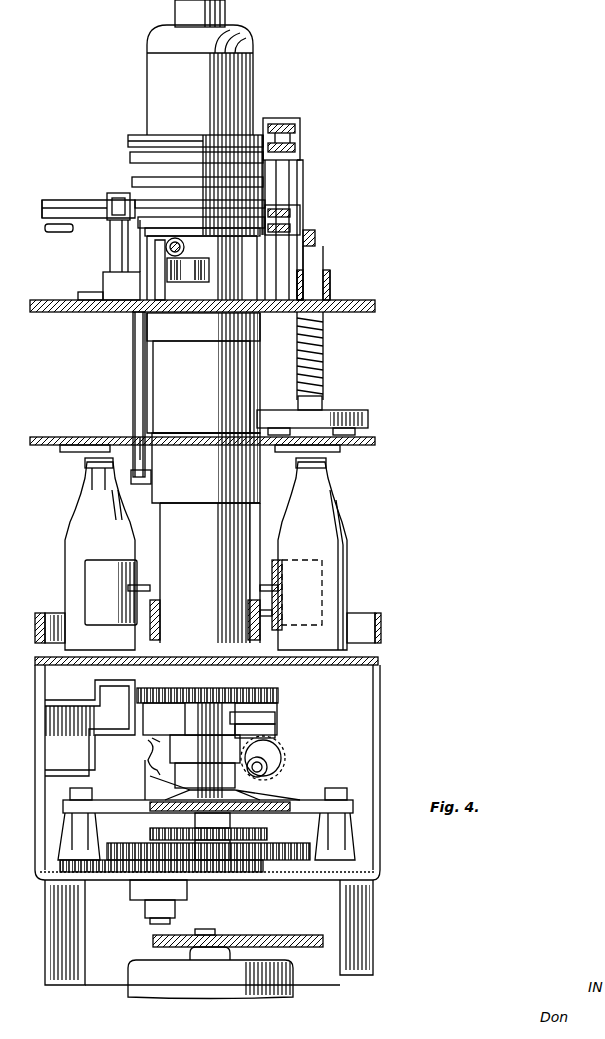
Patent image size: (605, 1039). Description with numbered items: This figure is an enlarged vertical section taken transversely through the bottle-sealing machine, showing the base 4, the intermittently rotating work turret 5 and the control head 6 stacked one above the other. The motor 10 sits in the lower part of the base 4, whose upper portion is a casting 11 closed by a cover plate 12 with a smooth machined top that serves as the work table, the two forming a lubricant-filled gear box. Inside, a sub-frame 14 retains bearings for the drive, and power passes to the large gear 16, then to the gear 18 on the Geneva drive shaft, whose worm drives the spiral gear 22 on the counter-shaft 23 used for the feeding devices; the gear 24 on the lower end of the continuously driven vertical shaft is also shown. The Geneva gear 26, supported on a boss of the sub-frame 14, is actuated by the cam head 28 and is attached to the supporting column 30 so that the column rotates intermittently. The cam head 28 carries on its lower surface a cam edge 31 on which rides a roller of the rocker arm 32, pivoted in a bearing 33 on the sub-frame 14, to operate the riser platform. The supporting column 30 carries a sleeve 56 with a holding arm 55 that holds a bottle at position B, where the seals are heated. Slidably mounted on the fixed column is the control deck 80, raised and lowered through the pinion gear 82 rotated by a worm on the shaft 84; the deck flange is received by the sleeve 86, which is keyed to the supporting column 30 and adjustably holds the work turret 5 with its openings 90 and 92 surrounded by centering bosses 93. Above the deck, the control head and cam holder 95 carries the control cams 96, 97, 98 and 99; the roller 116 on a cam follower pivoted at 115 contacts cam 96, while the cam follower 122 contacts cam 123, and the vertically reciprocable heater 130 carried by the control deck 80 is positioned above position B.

The control head and cam holder 95 is at (252, 48).
The roller 116 is at (285, 126).
The control head 6 is at (305, 139).
The control cam 96 is at (128, 138).
The control cam 97 is at (130, 157).
The control cam 98 is at (133, 181).
The control cam 99 is at (294, 185).
The pivot 115 is at (292, 204).
The cam 123 is at (300, 213).
The cam follower 122 is at (303, 222).
The shaft 84 is at (165, 250).
The pinion gear 82 is at (200, 281).
The control deck 80 is at (350, 302).
The sleeve 86 is at (197, 378).
The heater 130 is at (345, 410).
The centering bosses 93 is at (62, 436).
The opening 90 is at (78, 448).
The work turret 5 is at (380, 441).
The opening 92 is at (330, 452).
The holding arm 55 is at (120, 566).
The supporting column 30 is at (205, 554).
The position B is at (314, 546).
The sleeve 56 is at (165, 623).
The cover plate 12 is at (380, 661).
The casting 11 is at (380, 702).
The base 4 is at (388, 746).
The Geneva gear 26 is at (176, 695).
The cam edge 31 is at (232, 730).
The cam head 28 is at (265, 742).
The spiral gear 22 is at (282, 758).
The counter-shaft 23 is at (270, 768).
The rocker arm 32 is at (150, 761).
The bearing 33 is at (155, 779).
The sub-frame 14 is at (300, 804).
The gear 24 is at (265, 835).
The gear 18 is at (285, 862).
The large gear 16 is at (236, 875).
The motor 10 is at (165, 990).